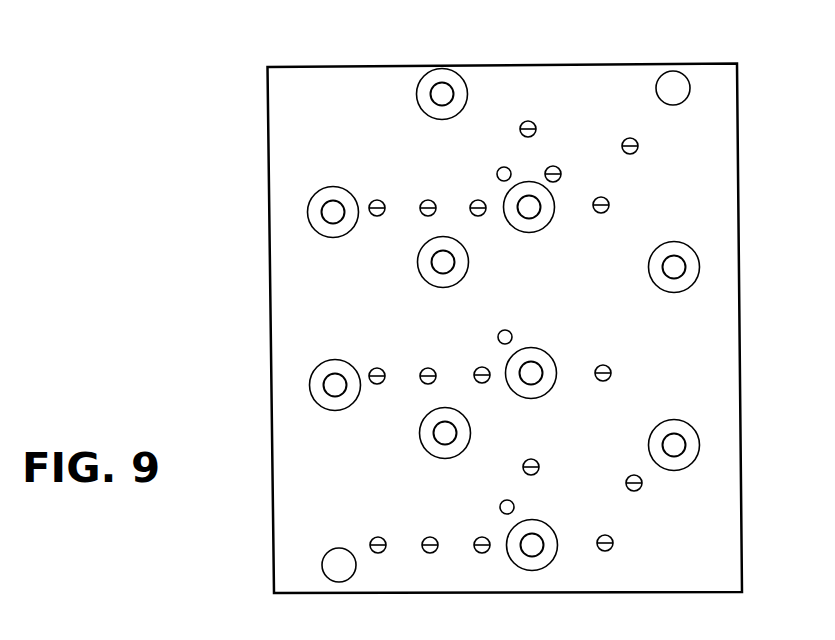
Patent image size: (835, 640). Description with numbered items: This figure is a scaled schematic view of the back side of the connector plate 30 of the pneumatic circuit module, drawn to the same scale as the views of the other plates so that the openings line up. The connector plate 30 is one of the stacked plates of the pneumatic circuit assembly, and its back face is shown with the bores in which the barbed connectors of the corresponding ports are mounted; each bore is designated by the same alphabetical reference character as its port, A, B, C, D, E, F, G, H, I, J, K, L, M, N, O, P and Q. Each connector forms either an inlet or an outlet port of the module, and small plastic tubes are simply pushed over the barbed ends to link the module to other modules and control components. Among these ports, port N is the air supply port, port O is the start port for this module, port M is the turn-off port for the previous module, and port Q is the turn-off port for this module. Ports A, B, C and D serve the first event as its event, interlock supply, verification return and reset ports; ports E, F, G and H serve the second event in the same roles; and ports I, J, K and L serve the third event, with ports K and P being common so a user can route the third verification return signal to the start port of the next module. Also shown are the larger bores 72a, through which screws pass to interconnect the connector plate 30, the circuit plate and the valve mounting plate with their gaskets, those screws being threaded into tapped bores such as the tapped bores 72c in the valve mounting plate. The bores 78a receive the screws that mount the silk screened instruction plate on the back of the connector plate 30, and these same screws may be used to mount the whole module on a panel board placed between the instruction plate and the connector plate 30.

The connector plate 30 is at (268, 308).
The bores 72a is at (449, 91).
The tapped bores 72c is at (530, 212).
The bores 78a is at (677, 83).
The port A is at (371, 200).
The port B is at (421, 200).
The port C is at (471, 201).
The port D is at (609, 205).
The port E is at (376, 368).
The port F is at (427, 368).
The port G is at (481, 367).
The port H is at (606, 365).
The port I is at (376, 537).
The port J is at (430, 537).
The port K is at (481, 537).
The port L is at (605, 535).
The port M is at (526, 121).
The port N is at (556, 166).
The port O is at (638, 146).
The port P is at (539, 465).
The port Q is at (640, 489).